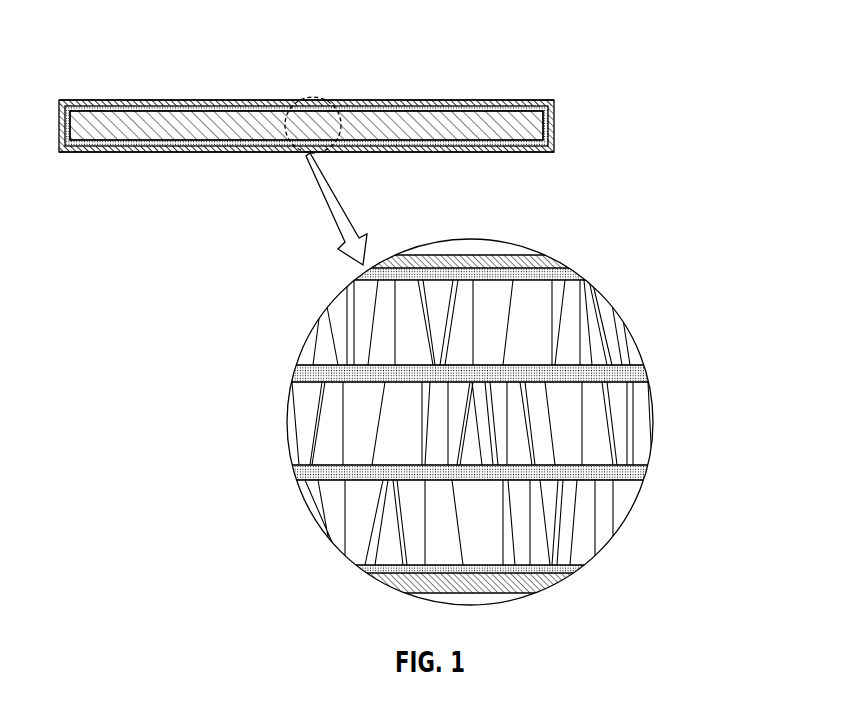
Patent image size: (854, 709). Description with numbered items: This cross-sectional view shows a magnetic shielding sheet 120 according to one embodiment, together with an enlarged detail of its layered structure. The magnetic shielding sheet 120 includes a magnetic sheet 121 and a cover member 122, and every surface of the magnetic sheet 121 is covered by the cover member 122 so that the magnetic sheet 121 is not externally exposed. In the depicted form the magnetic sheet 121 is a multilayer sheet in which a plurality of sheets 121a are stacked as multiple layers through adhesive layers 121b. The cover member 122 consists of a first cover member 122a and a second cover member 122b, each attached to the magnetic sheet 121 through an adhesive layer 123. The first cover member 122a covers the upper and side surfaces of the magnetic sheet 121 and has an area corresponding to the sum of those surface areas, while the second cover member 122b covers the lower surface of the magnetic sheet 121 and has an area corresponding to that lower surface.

The magnetic shielding sheet 120 is at (343, 27).
The magnetic sheet 121 is at (512, 120).
The sheets 121a is at (612, 327).
The adhesive layers 121b is at (640, 372).
The cover member 122 is at (683, 108).
The first cover member 122a is at (554, 113).
The second cover member 122b is at (524, 152).
The adhesive layer 123 is at (565, 272).